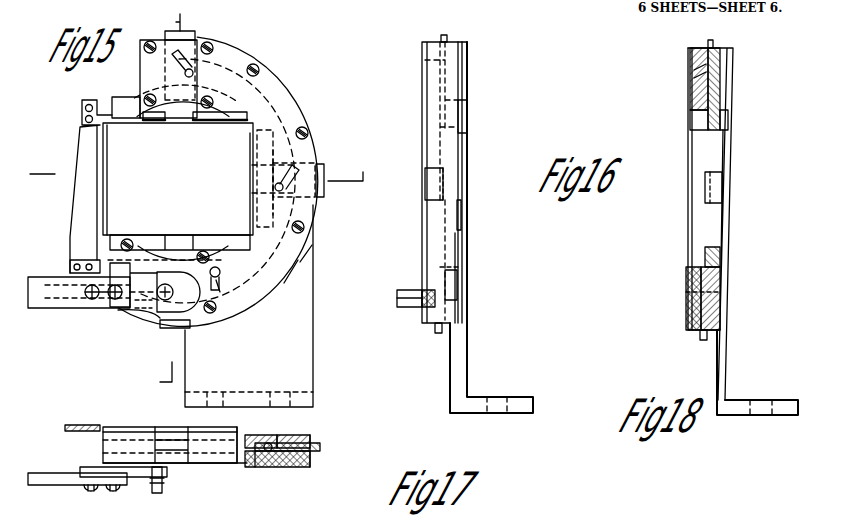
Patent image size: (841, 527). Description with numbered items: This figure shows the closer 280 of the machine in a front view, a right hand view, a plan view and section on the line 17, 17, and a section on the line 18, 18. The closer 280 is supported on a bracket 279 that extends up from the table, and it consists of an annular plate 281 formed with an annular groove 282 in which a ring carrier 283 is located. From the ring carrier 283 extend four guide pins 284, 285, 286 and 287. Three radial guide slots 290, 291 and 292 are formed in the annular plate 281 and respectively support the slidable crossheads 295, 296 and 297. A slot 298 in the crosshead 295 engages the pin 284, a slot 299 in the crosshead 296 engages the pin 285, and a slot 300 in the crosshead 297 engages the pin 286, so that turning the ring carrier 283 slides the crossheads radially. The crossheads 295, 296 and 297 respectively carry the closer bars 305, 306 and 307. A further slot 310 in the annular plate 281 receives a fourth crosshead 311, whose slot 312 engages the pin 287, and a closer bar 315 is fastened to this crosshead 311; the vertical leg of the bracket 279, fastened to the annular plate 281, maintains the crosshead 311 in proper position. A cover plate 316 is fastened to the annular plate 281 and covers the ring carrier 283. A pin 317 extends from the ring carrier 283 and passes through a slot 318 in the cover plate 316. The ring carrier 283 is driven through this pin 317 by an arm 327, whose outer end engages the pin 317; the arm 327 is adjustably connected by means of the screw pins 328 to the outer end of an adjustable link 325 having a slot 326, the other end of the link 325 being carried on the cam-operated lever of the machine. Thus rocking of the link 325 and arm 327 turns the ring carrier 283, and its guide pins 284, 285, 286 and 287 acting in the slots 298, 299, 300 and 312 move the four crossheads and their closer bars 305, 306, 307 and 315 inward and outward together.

In FIG. 15, the section line 17- 17 is at (201, 169).
In FIG. 15, the section line 18- 18 is at (171, 201).
In FIG. 15, the bracket 279 is at (313, 367).
In FIG. 16, the bracket 279 is at (467, 356).
In FIG. 18, the bracket 279 is at (733, 357).
In FIG. 15, the closer 280 is at (226, 181).
In FIG. 16, the closer 280 is at (392, 252).
In FIG. 18, the closer 280 is at (651, 262).
In FIG. 17, the annular plate 281 is at (103, 448).
In FIG. 16, the annular plate 281 is at (428, 42).
In FIG. 18, the annular plate 281 is at (715, 44).
In FIG. 15, the annular groove 282 is at (283, 118).
In FIG. 17, the annular groove 282 is at (256, 468).
In FIG. 15, the ring carrier 283 is at (97, 245).
In FIG. 17, the ring carrier 283 is at (310, 462).
In FIG. 15, the guide pin 284 is at (194, 74).
In FIG. 18, the guide pin 284 is at (705, 83).
In FIG. 15, the guide pin 285 is at (300, 195).
In FIG. 17, the guide pin 285 is at (275, 468).
In FIG. 15, the guide pin 286 is at (155, 280).
In FIG. 18, the guide pin 286 is at (700, 293).
In FIG. 15, the guide pin 287 is at (220, 273).
In FIG. 15, the radial guide slot 290 is at (140, 68).
In FIG. 15, the radial guide slot 291 is at (305, 163).
In FIG. 17, the radial guide slot 291 is at (300, 435).
In FIG. 15, the radial guide slot 292 is at (200, 315).
In FIG. 15, the crosshead 295 is at (165, 35).
In FIG. 16, the crosshead 295 is at (446, 40).
In FIG. 18, the crosshead 295 is at (708, 44).
In FIG. 15, the crosshead 296 is at (325, 170).
In FIG. 17, the crosshead 296 is at (322, 447).
In FIG. 16, the crosshead 296 is at (445, 184).
In FIG. 18, the crosshead 296 is at (705, 182).
In FIG. 15, the crosshead 297 is at (165, 329).
In FIG. 16, the crosshead 297 is at (437, 334).
In FIG. 18, the crosshead 297 is at (703, 340).
In FIG. 15, the slot 298 is at (183, 55).
In FIG. 18, the slot 298 is at (705, 68).
In FIG. 15, the slot 299 is at (328, 188).
In FIG. 17, the slot 299 is at (273, 435).
In FIG. 15, the slot 300 is at (182, 308).
In FIG. 18, the slot 300 is at (705, 312).
In FIG. 15, the closer bar 305 is at (203, 123).
In FIG. 16, the closer bar 305 is at (467, 121).
In FIG. 18, the closer bar 305 is at (727, 116).
In FIG. 15, the closer bar 306 is at (257, 210).
In FIG. 17, the closer bar 306 is at (250, 430).
In FIG. 16, the closer bar 306 is at (462, 220).
In FIG. 18, the closer bar 306 is at (725, 191).
In FIG. 15, the closer bar 307 is at (150, 237).
In FIG. 17, the closer bar 307 is at (153, 427).
In FIG. 16, the closer bar 307 is at (462, 251).
In FIG. 18, the closer bar 307 is at (722, 257).
In FIG. 15, the slot 310 is at (286, 268).
In FIG. 15, the fourth crosshead 311 is at (288, 278).
In FIG. 16, the fourth crosshead 311 is at (452, 285).
In FIG. 15, the slot 312 is at (219, 284).
In FIG. 15, the closer bar 315 is at (100, 203).
In FIG. 17, the closer bar 315 is at (88, 424).
In FIG. 17, the cover plate 316 is at (305, 468).
In FIG. 16, the cover plate 316 is at (424, 105).
In FIG. 18, the cover plate 316 is at (690, 222).
In FIG. 15, the pin 317 is at (152, 315).
In FIG. 17, the pin 317 is at (157, 494).
In FIG. 16, the pin 317 is at (405, 307).
In FIG. 15, the slot 318 is at (186, 288).
In FIG. 15, the adjustable link 325 is at (79, 292).
In FIG. 17, the adjustable link 325 is at (38, 486).
In FIG. 15, the slot 326 is at (72, 266).
In FIG. 15, the arm 327 is at (157, 325).
In FIG. 17, the arm 327 is at (168, 475).
In FIG. 15, the screw pins 328 is at (96, 300).
In FIG. 17, the screw pins 328 is at (113, 492).